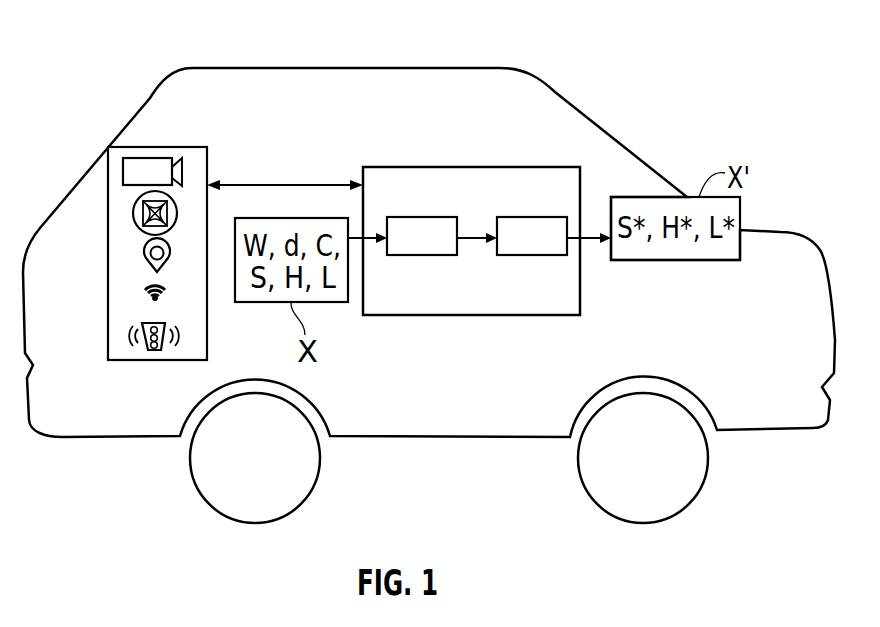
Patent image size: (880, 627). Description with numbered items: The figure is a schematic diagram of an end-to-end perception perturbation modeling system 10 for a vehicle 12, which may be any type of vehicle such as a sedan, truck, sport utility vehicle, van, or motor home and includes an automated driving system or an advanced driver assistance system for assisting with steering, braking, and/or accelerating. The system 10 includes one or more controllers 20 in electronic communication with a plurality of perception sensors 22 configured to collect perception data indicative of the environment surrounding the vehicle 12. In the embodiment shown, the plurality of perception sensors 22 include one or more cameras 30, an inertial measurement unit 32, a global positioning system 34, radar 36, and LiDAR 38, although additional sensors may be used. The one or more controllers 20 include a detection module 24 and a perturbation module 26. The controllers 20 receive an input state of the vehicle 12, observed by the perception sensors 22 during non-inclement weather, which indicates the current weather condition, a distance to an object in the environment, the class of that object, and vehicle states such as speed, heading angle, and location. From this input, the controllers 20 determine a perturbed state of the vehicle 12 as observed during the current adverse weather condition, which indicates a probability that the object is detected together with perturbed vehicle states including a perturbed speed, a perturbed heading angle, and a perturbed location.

The end-to-end perception perturbation modeling system 10 is at (380, 84).
The vehicle 12 is at (576, 95).
The one or more controllers 20 is at (437, 166).
The plurality of perception sensors 22 is at (157, 147).
The detection module 24 is at (436, 250).
The perturbation module 26 is at (546, 250).
The cameras 30 is at (123, 167).
The inertial measurement unit 32 is at (133, 214).
The global positioning system 34 is at (144, 253).
The radar 36 is at (140, 284).
The LiDAR 38 is at (132, 332).